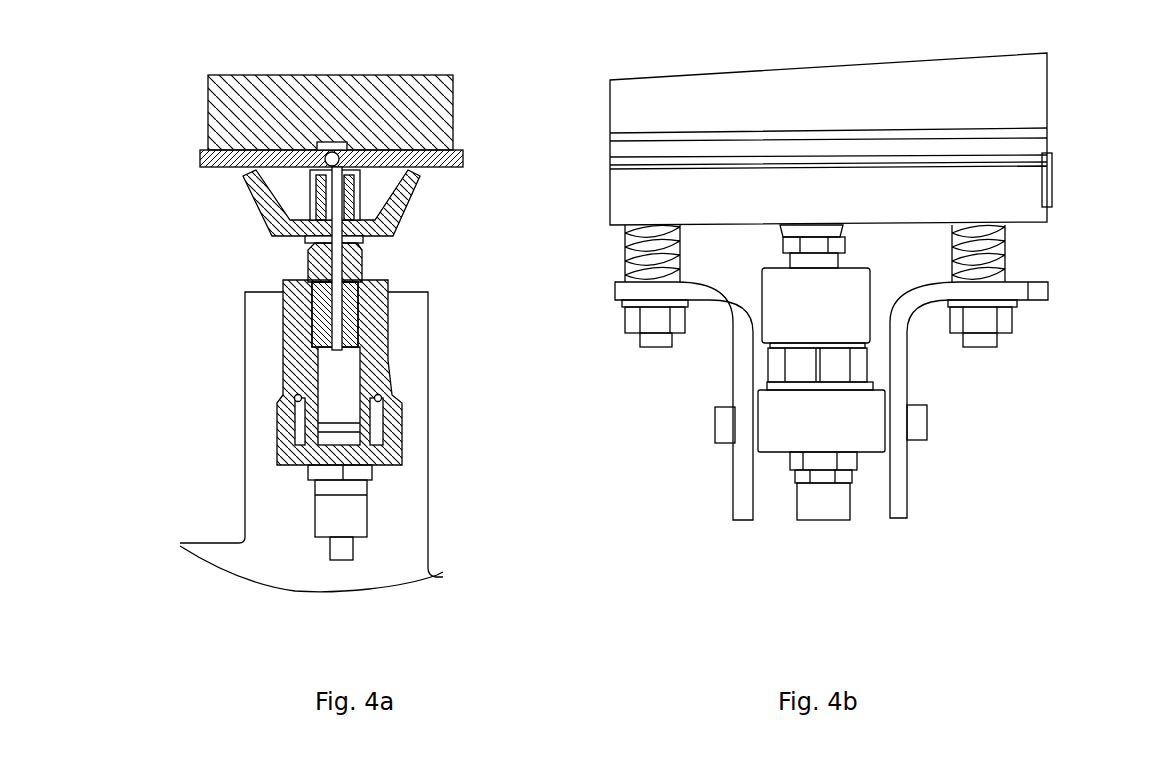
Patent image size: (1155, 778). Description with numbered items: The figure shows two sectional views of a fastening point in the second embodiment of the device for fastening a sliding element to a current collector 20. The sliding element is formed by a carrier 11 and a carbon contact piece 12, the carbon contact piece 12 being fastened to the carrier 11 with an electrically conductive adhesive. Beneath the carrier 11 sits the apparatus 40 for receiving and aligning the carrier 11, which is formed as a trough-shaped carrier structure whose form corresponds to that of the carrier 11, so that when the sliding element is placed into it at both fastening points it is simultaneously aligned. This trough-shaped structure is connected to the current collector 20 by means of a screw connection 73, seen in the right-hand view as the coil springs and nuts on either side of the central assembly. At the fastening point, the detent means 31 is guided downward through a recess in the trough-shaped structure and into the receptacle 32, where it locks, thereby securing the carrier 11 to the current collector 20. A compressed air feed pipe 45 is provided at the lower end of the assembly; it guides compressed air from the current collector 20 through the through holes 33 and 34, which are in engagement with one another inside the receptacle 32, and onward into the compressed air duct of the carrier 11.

In FIG. 4A, the carrier 11 is at (463, 153).
In FIG. 4B, the carrier 11 is at (1045, 172).
In FIG. 4A, the carbon contact piece 12 is at (247, 107).
In FIG. 4B, the carbon contact piece 12 is at (1012, 105).
In FIG. 4B, the current collector 20 is at (900, 500).
In FIG. 4A, the detent means 31 is at (360, 248).
In FIG. 4B, the detent means 31 is at (782, 242).
In FIG. 4A, the receptacle 32 is at (303, 337).
In FIG. 4B, the receptacle 32 is at (805, 312).
In FIG. 4A, the through hole 33 is at (340, 312).
In FIG. 4A, the through hole 34 is at (340, 403).
In FIG. 4A, the apparatus for receiving and aligning the carrier 40 is at (268, 208).
In FIG. 4B, the apparatus for receiving and aligning the carrier 40 is at (983, 197).
In FIG. 4A, the compressed air feed pipe 45 is at (340, 518).
In FIG. 4B, the compressed air feed pipe 45 is at (823, 507).
In FIG. 4B, the screw connection 73 is at (625, 271).